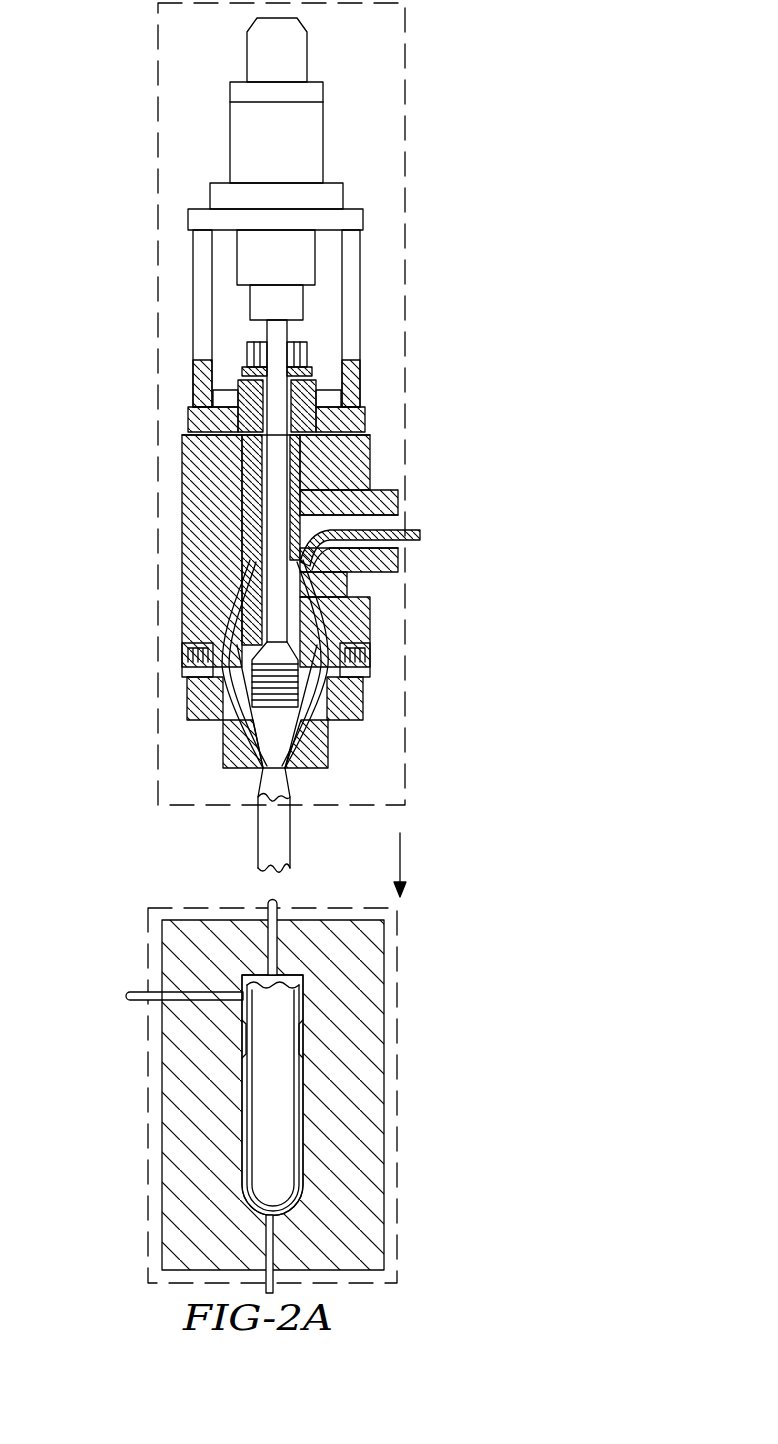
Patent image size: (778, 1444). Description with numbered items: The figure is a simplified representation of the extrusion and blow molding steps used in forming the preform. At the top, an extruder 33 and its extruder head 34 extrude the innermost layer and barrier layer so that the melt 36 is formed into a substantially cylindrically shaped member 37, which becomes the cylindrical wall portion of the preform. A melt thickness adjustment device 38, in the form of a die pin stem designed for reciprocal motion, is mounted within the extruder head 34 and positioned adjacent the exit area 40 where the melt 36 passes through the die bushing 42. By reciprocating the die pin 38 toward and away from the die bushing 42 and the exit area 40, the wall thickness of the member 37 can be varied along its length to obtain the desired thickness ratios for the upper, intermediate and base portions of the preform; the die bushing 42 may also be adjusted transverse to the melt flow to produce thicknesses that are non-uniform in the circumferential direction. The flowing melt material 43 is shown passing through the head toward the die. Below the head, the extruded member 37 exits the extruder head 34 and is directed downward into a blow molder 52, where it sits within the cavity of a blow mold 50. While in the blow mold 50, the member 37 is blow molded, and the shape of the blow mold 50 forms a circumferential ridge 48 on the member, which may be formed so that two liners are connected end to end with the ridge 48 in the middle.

The extruder 33 is at (408, 213).
The extruder head 34 is at (353, 323).
The melt thickness adjustment device 38 is at (280, 477).
The melt 36 is at (413, 528).
The flowing parison material 43 is at (320, 600).
The die bushing 42 is at (318, 750).
The exit area 40 is at (286, 771).
The cylindrically shaped member 37 is at (258, 850).
The blow molder 52 is at (147, 1062).
The blow mold 50 is at (377, 950).
The circumferential ridge 48 is at (307, 1023).